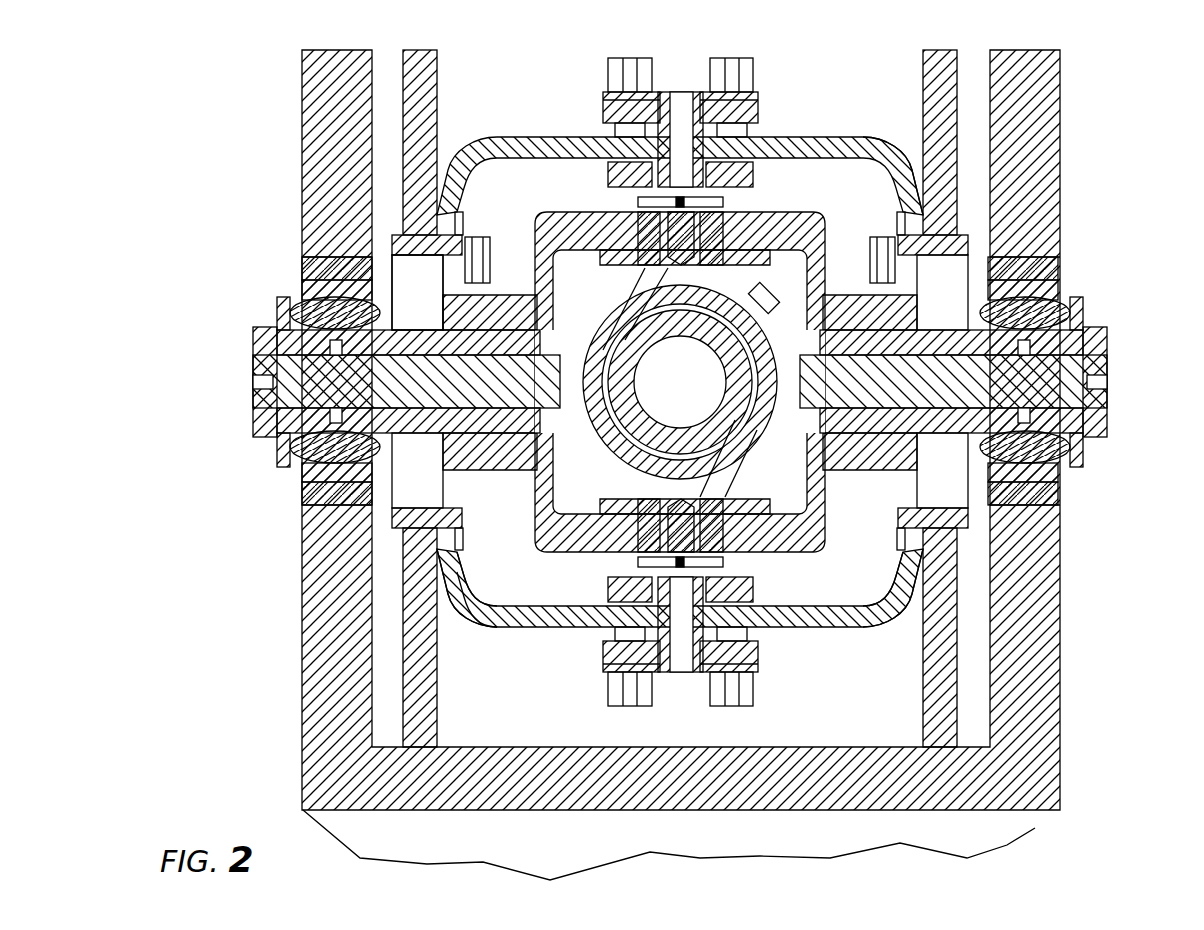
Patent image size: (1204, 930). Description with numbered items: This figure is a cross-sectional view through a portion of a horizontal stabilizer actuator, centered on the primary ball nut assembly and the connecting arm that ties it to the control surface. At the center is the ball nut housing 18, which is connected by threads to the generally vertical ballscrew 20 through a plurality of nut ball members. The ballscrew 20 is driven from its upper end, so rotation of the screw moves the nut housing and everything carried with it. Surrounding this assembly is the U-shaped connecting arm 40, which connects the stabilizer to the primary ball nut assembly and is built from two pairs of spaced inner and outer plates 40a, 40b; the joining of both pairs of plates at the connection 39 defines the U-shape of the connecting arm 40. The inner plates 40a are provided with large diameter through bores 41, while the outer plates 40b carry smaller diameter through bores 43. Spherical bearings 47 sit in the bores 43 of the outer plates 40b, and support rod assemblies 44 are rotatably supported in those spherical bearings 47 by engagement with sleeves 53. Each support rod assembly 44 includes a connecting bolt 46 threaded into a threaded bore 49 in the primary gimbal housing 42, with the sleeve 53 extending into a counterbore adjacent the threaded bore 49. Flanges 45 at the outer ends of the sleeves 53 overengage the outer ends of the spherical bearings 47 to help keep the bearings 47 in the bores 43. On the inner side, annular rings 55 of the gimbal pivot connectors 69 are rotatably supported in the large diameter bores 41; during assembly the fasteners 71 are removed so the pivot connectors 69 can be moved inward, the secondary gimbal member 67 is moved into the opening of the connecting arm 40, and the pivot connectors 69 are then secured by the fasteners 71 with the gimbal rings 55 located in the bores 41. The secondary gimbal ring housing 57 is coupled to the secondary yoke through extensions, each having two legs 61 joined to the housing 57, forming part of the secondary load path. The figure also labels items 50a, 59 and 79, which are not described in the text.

The ball nut housing 18 is at (625, 290).
The ballscrew 20 is at (735, 420).
The connection 39 is at (357, 868).
The U-shaped connecting arm 40 is at (975, 855).
The inner plates 40a is at (437, 665).
The outer plates 40b is at (310, 740).
The large diameter through bores 41 is at (400, 250).
The primary gimbal housing 42 is at (882, 230).
The through bores 43 is at (302, 267).
The support rod assemblies 44 is at (275, 333).
The flanges 45 is at (278, 440).
The connecting bolt 46 is at (300, 350).
The spherical bearings 47 is at (302, 290).
The threaded bore 49 is at (590, 295).
The lower cover end 50a is at (600, 630).
The sleeves 53 is at (300, 450).
The annular rings 55 is at (400, 518).
The secondary gimbal ring housing 57 is at (812, 650).
The left housing section 59 is at (455, 500).
The legs 61 is at (730, 112).
The secondary gimbal member 67 is at (560, 135).
The gimbal pivot connectors 69 is at (905, 560).
The fasteners 71 is at (478, 237).
The bearing housing 79 is at (448, 240).